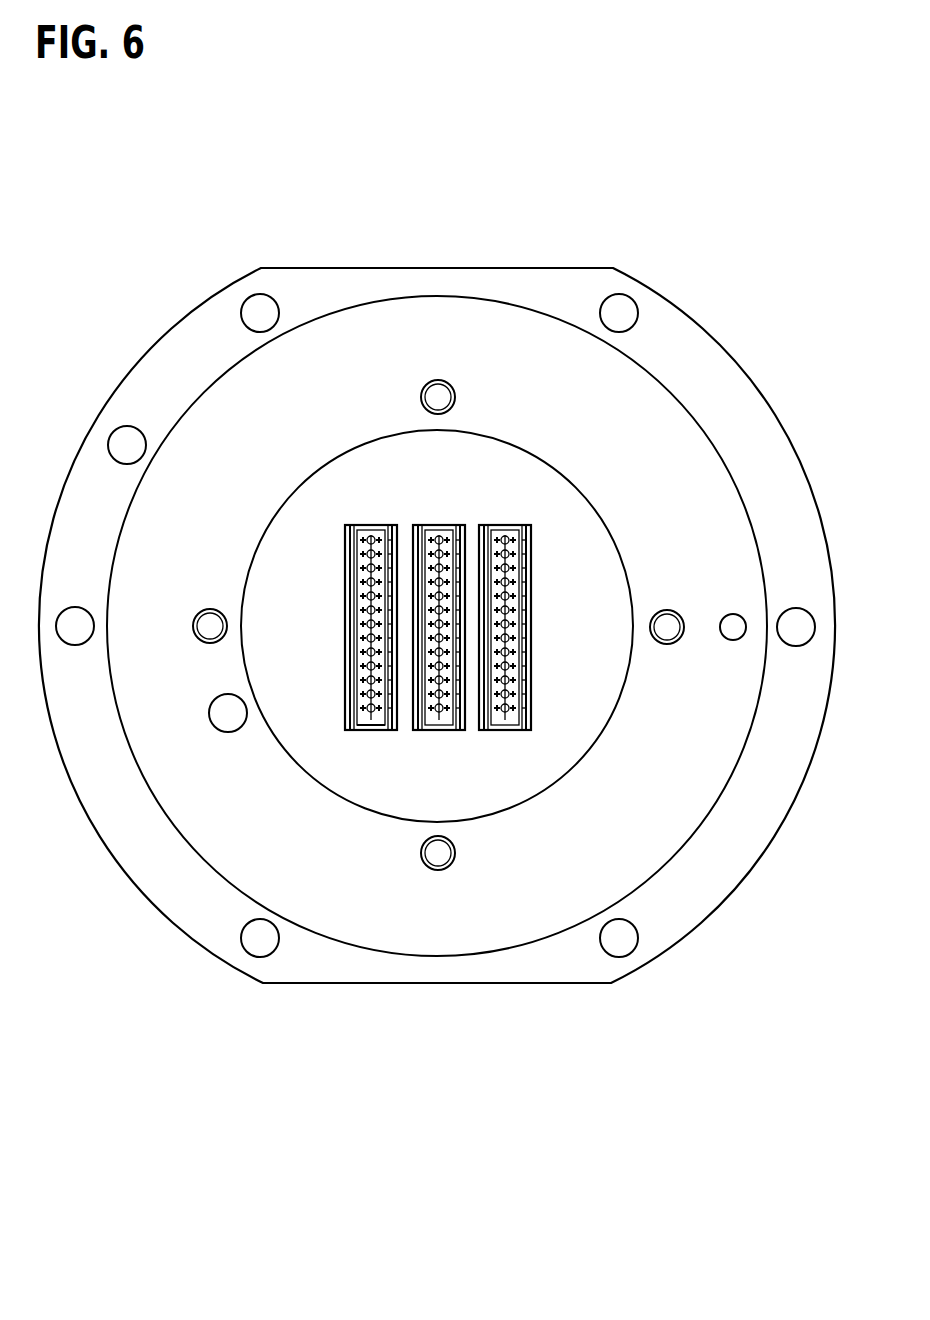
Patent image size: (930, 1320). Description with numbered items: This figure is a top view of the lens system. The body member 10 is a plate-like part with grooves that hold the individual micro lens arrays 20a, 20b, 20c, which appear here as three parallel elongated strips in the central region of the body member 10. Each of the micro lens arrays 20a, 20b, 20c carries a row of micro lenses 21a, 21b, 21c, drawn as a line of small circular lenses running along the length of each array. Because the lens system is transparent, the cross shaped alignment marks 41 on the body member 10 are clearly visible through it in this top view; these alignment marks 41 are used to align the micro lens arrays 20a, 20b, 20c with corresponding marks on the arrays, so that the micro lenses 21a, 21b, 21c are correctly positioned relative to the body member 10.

The body member 10 is at (437, 491).
The micro lens array 20a is at (516, 748).
The micro lens array 20b is at (448, 748).
The micro lens array 20c is at (378, 748).
The micro lenses 21a is at (506, 507).
The micro lenses 21b is at (439, 507).
The micro lenses 21c is at (371, 507).
The cross shaped alignment marks 41 is at (312, 958).